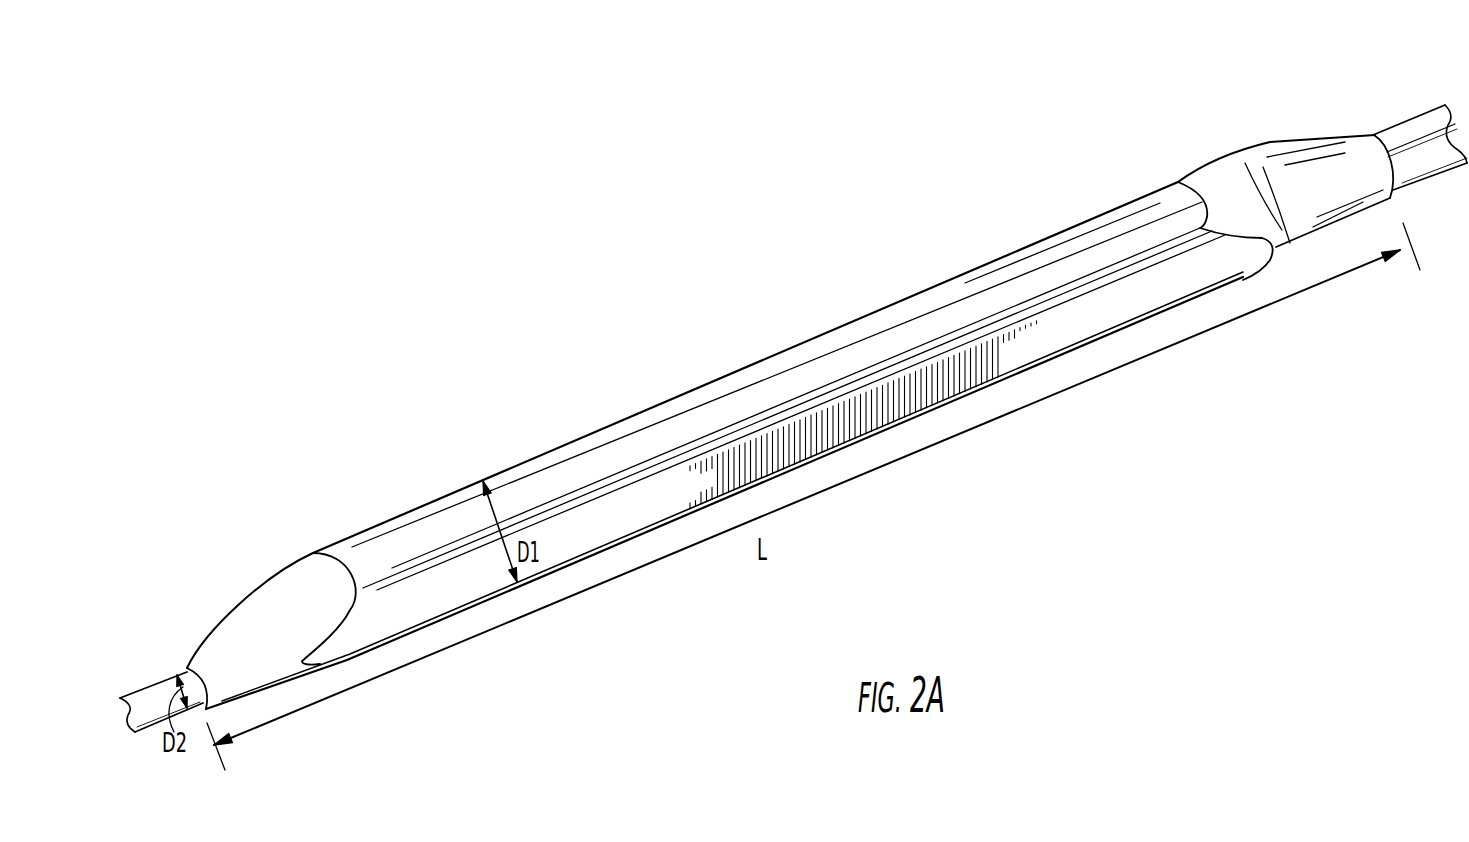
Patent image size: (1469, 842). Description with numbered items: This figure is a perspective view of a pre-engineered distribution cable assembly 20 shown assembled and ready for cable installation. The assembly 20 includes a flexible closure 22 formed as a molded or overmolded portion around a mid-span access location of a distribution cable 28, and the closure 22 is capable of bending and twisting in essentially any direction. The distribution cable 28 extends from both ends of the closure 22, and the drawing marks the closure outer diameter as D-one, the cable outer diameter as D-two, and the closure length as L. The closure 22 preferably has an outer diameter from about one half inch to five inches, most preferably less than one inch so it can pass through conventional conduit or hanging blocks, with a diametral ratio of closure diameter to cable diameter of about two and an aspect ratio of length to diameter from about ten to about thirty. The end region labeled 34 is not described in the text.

The pre-engineered distribution cable assembly 20 is at (570, 402).
The flexible closure 22 is at (309, 550).
The distribution cable 28 is at (149, 693).
The connector collar 34 is at (1393, 133).